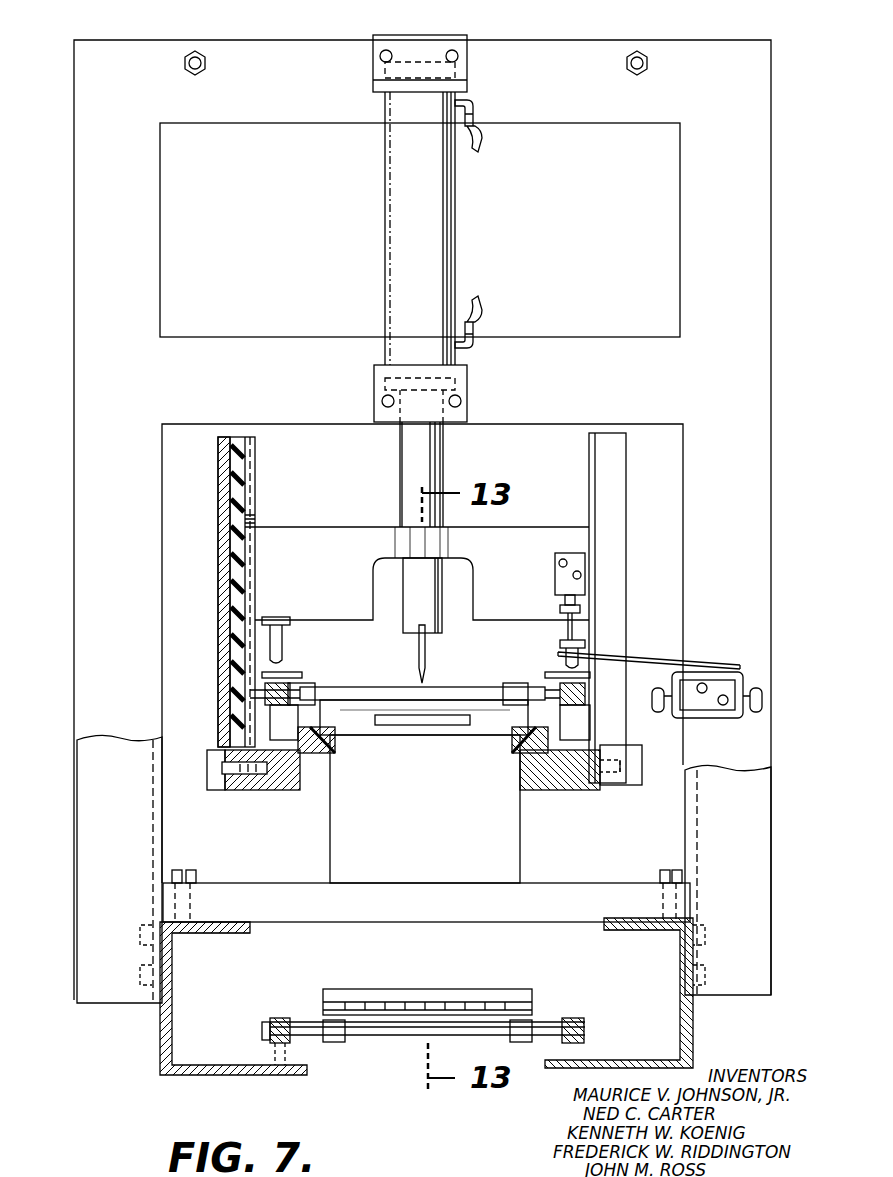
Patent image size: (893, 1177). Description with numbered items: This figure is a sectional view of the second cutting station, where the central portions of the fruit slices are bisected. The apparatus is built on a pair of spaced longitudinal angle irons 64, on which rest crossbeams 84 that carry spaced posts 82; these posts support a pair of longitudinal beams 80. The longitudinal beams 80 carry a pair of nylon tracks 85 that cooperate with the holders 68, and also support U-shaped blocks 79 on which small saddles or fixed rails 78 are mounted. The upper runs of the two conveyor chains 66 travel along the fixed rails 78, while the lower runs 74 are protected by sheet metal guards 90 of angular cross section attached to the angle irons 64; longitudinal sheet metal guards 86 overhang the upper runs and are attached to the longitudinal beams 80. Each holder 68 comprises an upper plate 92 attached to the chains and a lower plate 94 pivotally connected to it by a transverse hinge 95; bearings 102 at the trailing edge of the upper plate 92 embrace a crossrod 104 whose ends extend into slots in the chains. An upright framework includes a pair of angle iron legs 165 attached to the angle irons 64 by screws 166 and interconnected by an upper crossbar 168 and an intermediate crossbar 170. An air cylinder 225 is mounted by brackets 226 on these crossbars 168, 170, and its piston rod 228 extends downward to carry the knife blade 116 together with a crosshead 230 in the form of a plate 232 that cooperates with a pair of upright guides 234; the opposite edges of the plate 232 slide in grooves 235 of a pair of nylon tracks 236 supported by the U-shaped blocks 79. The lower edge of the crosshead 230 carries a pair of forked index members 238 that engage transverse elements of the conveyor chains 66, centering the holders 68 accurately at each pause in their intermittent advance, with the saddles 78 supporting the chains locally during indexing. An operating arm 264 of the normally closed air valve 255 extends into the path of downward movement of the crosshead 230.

The upper crossbar 168 is at (572, 40).
The intermediate crossbar 170 is at (536, 336).
The brackets 226 is at (468, 62).
The air cylinder 225 is at (385, 246).
The crosshead 230 is at (316, 522).
The upright guides 234 is at (220, 458).
The grooves 235 is at (252, 472).
The nylon tracks 236 is at (236, 494).
The plate 232 is at (314, 564).
The piston rod 228 is at (445, 455).
The knife blade 116 is at (420, 656).
The crossrod 104 is at (430, 688).
The bearings 102 is at (506, 688).
The upper plate 92 is at (490, 712).
The holders 68 is at (436, 738).
The conveyor chains 66 is at (262, 690).
The fixed rails 78 is at (276, 710).
The sheet metal guards 86 is at (292, 680).
The index members 238 is at (286, 655).
The operating arm 264 is at (640, 655).
The normally closed air valve 255 is at (712, 706).
The nylon tracks 85 is at (335, 753).
The longitudinal beams 80 is at (312, 772).
The U-shaped blocks 79 is at (258, 792).
The posts 82 is at (330, 868).
The crossbeams 84 is at (426, 896).
The sheet metal guards 90 is at (164, 1064).
The longitudinal angle irons 64 is at (218, 930).
The angle iron legs 165 is at (98, 836).
The screws 166 is at (145, 978).
The lower plate 94 is at (492, 988).
The transverse hinge 95 is at (426, 1000).
The lower runs 74 is at (268, 1036).